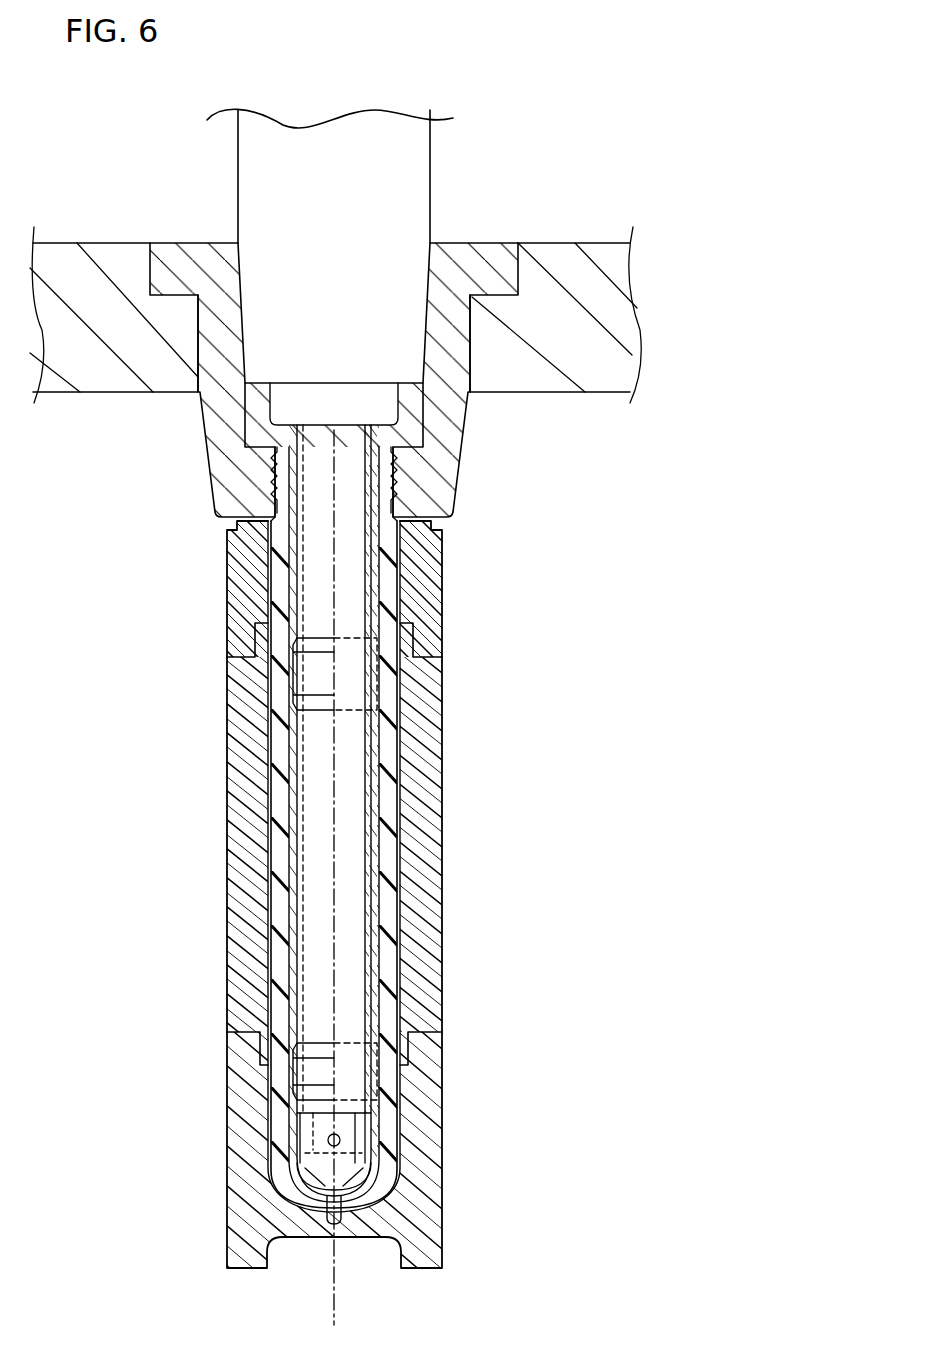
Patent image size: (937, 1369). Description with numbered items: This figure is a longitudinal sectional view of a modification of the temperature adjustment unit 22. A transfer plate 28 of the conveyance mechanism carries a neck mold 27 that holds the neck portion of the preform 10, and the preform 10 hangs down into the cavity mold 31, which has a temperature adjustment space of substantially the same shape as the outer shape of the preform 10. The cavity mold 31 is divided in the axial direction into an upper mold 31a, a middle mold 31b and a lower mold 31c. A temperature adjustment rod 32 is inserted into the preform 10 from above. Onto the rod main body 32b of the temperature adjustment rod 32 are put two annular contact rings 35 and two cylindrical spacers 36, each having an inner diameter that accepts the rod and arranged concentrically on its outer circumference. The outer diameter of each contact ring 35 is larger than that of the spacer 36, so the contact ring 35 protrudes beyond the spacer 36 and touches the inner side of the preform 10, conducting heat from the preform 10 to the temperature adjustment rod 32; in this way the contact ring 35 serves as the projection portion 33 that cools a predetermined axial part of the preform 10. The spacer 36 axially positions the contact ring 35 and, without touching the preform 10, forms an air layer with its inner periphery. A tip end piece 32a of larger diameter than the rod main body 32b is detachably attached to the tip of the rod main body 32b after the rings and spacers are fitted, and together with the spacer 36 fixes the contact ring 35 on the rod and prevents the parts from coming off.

The preform 10 is at (278, 990).
The temperature adjustment unit 22 is at (612, 210).
The neck mold 27 is at (457, 463).
The transfer plate 28 is at (558, 250).
The cavity mold 31 is at (455, 840).
The upper mold 31a is at (443, 597).
The middle mold 31b is at (443, 831).
The lower mold 31c is at (424, 1097).
The temperature adjustment rod 32 is at (328, 875).
The tip end piece 32a is at (372, 1152).
The rod main body 32b is at (350, 901).
The projection portion 33 is at (372, 682).
The annular contact ring 35 is at (422, 869).
The cylindrical spacer 36 is at (372, 552).